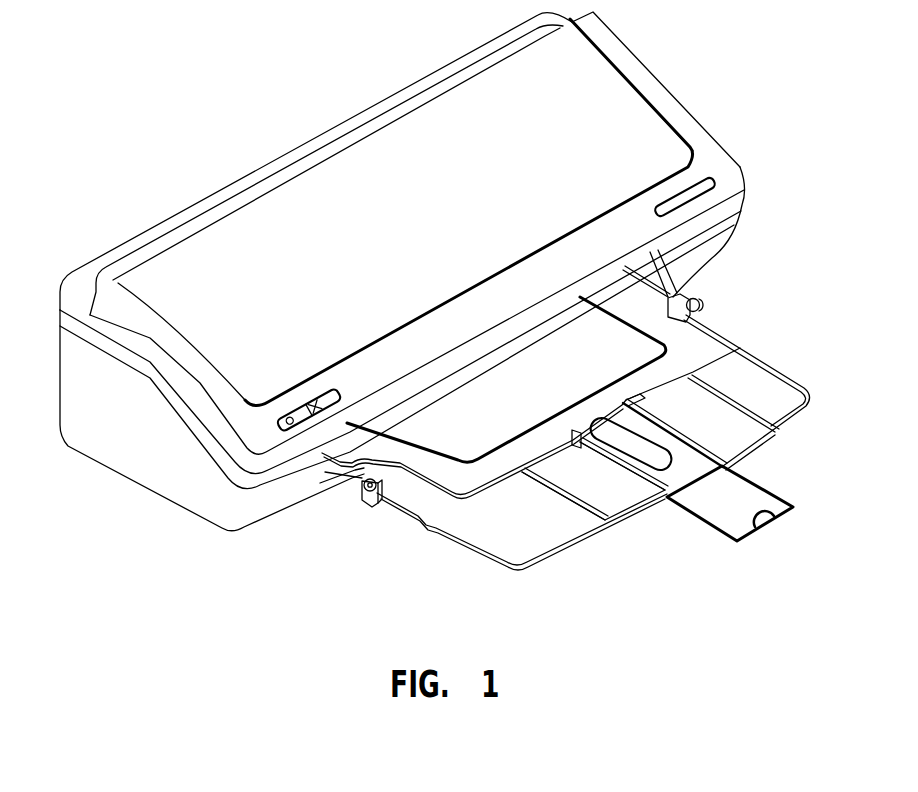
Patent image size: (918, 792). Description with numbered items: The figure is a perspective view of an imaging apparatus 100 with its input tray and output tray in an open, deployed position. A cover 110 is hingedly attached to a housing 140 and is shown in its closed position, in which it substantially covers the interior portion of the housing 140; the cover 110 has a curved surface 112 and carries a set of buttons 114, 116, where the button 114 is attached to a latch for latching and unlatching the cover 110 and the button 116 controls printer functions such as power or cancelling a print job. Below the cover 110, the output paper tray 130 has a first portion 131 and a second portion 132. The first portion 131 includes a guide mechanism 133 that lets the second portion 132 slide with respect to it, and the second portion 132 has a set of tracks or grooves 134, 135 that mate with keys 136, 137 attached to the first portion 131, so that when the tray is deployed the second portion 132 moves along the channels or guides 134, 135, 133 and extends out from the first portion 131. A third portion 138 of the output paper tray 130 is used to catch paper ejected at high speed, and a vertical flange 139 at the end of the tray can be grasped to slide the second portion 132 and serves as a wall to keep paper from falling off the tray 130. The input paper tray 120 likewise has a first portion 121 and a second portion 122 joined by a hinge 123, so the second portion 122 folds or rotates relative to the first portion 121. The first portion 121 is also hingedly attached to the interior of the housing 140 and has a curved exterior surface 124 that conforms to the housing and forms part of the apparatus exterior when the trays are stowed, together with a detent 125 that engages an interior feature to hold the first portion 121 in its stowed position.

The imaging apparatus 100 is at (276, 106).
The cover 110 is at (650, 125).
The curved surface 112 is at (590, 77).
The button 114 is at (712, 175).
The button 116 is at (308, 405).
The input paper tray 120 is at (763, 377).
The first portion of the input paper tray 121 is at (362, 498).
The second portion of the input paper tray 122 is at (548, 548).
The hinge 123 is at (398, 461).
The exterior surface 124 is at (327, 483).
The detent 125 is at (358, 495).
The output paper tray 130 is at (700, 337).
The first portion of the output paper tray 131 is at (463, 483).
The second portion of the output paper tray 132 is at (623, 505).
The guide mechanism 133 is at (520, 474).
The track or groove 134 is at (687, 433).
The track or groove 135 is at (624, 470).
The key 136 is at (573, 432).
The key 137 is at (641, 393).
The third portion of the output paper tray 138 is at (742, 487).
The vertical flange 139 is at (768, 520).
The housing 140 is at (97, 447).